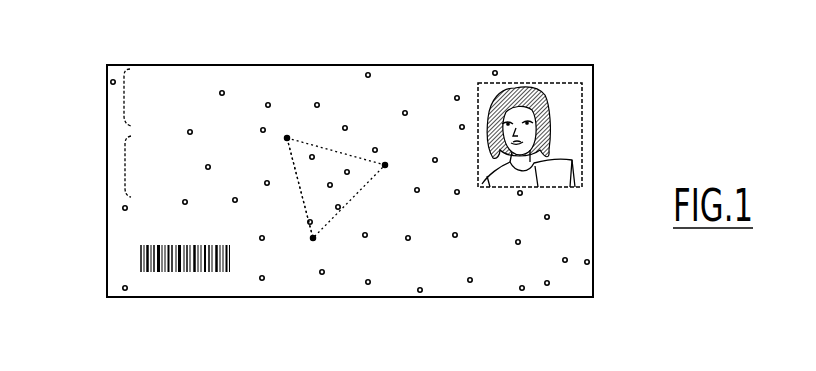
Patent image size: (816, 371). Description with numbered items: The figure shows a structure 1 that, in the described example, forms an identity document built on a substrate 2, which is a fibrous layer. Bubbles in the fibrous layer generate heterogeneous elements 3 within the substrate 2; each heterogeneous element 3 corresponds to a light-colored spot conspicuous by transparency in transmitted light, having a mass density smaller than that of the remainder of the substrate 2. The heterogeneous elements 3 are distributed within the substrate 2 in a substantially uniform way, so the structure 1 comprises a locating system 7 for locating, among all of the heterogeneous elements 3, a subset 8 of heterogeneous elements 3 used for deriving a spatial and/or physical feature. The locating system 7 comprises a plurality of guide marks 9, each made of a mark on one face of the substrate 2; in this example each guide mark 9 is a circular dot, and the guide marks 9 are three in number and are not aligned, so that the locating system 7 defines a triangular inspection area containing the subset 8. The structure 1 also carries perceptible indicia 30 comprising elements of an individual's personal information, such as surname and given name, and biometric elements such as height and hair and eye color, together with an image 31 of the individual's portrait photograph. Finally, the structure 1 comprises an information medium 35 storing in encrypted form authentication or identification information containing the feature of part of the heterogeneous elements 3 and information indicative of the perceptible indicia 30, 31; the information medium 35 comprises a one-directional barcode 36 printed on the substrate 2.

The structure 1 is at (603, 98).
The substrate 2 is at (443, 265).
The heterogeneous elements 3 is at (303, 192).
The locating system 7 is at (362, 148).
The subset of heterogeneous elements 8 is at (325, 210).
The guide marks 9 is at (287, 136).
The perceptible indicia 30 is at (116, 98).
The image 31 is at (595, 143).
The information medium 35 is at (174, 278).
The barcode 36 is at (138, 263).